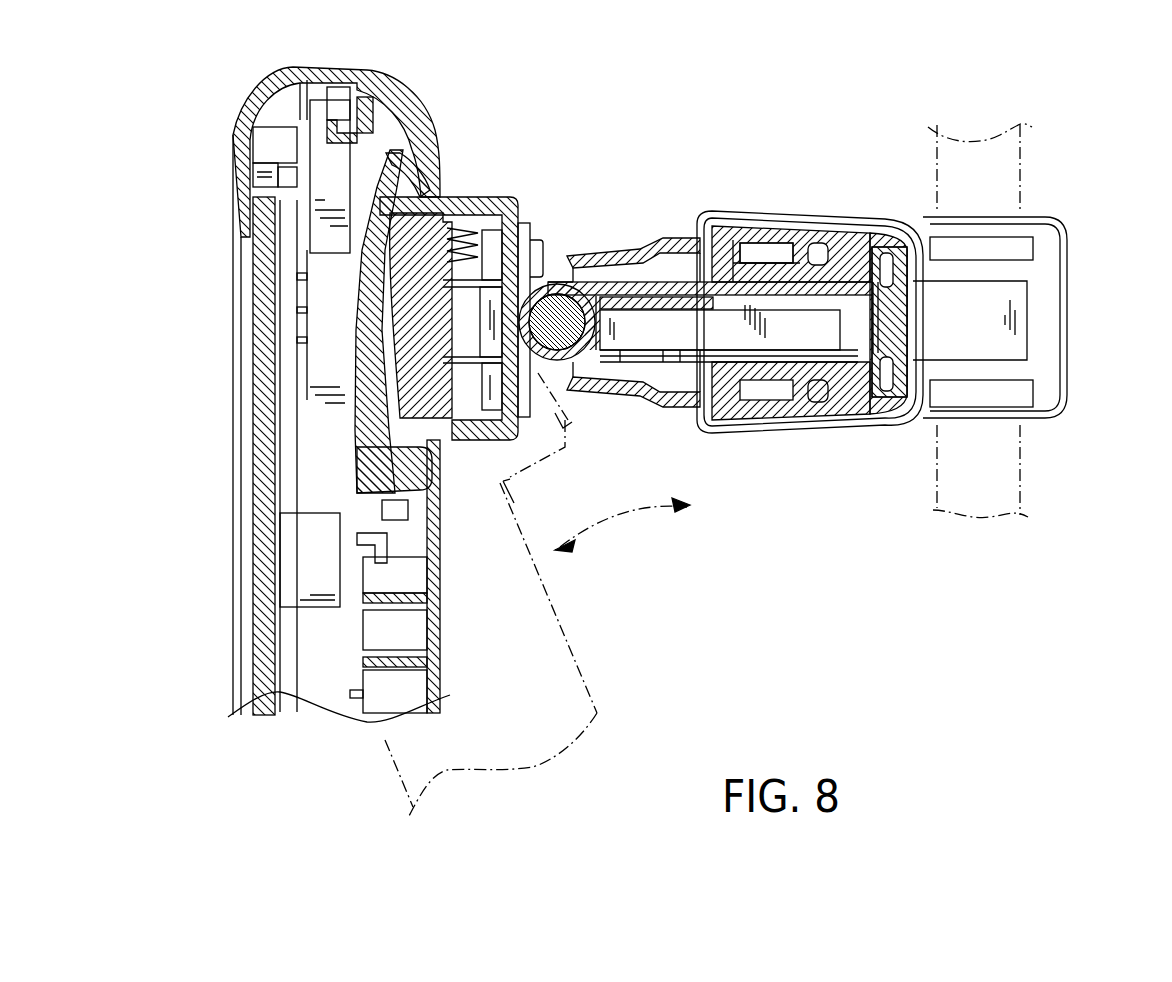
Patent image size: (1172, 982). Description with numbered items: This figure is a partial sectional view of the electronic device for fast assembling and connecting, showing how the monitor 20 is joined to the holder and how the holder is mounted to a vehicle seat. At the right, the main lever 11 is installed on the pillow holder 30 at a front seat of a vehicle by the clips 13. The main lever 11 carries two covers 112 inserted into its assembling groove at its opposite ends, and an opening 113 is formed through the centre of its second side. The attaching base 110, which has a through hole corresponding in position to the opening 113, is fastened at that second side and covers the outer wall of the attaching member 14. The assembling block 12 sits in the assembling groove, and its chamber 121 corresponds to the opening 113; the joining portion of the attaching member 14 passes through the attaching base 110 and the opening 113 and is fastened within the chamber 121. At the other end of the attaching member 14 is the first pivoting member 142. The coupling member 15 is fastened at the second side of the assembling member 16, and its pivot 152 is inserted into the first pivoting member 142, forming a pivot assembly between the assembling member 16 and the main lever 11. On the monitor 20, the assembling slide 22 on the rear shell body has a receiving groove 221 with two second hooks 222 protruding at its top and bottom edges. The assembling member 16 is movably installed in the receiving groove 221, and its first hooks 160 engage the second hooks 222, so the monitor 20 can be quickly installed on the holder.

The monitor 20 is at (268, 97).
The assembling slide 22 is at (397, 108).
The receiving groove 221 is at (385, 345).
The second hook 222 is at (418, 455).
The first hook 160 is at (447, 480).
The assembling member 16 is at (470, 207).
The coupling member 15 is at (525, 230).
The first pivoting member 142 is at (548, 280).
The pivot 152 is at (570, 373).
The attaching base 110 is at (647, 240).
The attaching member 14 is at (777, 335).
The cover 112 is at (800, 210).
The opening 113 is at (733, 240).
The chamber 121 is at (840, 260).
The main lever 11 is at (827, 403).
The assembling block 12 is at (890, 390).
The clip 13 is at (1055, 350).
The pillow holder 30 is at (1025, 176).